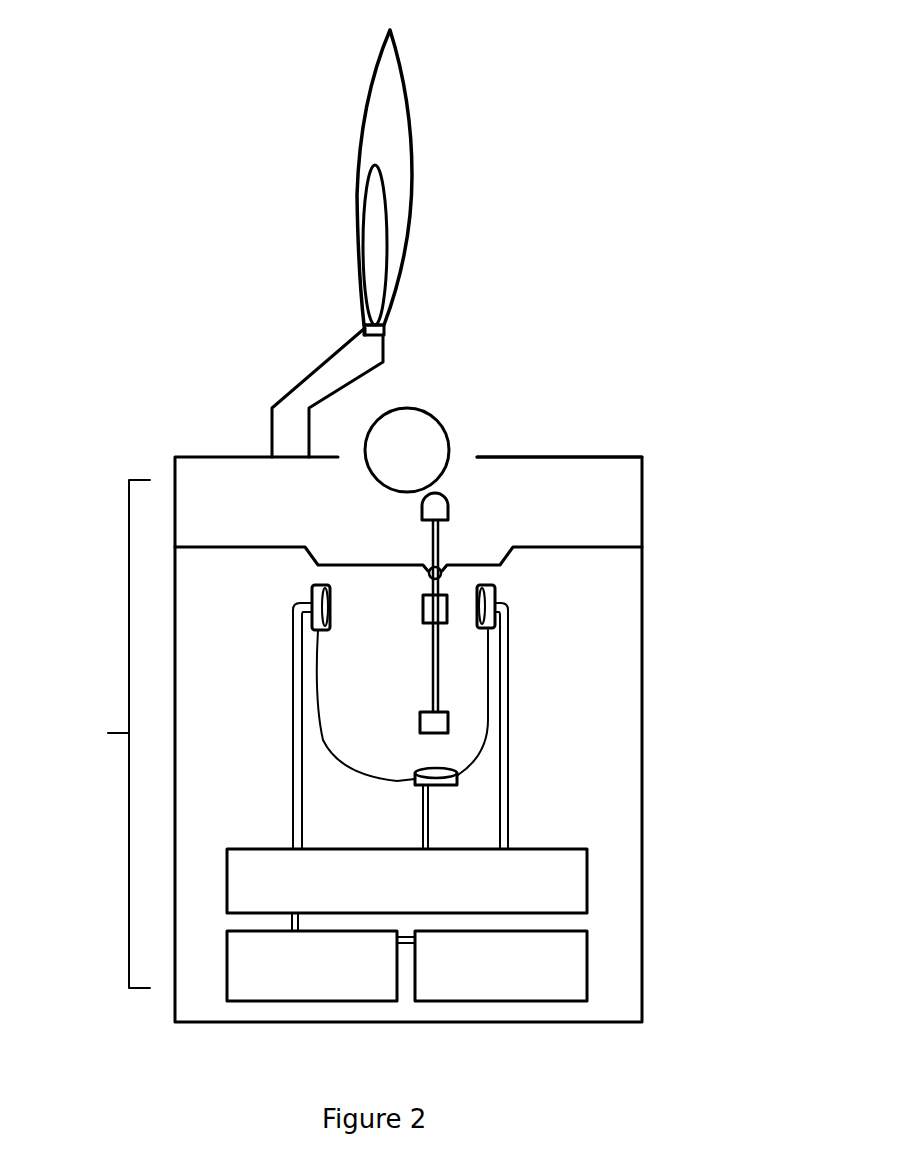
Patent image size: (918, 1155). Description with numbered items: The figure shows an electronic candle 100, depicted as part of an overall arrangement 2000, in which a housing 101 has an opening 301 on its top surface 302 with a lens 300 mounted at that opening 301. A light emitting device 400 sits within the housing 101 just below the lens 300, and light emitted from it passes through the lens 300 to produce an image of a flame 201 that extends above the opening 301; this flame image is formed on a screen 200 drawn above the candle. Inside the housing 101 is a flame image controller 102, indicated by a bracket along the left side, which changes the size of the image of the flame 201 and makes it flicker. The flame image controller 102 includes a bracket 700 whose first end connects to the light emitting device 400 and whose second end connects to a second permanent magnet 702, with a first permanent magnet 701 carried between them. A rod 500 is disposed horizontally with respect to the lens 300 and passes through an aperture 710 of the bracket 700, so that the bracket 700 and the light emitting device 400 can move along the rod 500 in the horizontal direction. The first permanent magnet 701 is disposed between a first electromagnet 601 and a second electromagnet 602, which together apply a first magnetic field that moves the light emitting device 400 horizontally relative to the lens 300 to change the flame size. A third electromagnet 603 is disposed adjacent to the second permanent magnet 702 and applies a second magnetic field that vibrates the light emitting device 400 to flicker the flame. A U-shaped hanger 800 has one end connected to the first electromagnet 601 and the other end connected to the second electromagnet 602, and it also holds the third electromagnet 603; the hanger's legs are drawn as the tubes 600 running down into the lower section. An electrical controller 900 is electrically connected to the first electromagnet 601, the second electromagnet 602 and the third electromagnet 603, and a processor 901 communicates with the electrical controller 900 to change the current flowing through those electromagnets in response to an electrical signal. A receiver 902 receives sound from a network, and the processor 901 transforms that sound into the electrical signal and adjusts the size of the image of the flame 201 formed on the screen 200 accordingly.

The system 2000 is at (168, 52).
The electronic candle 100 is at (183, 405).
The housing 101 is at (642, 618).
The flame image controller 102 is at (94, 734).
The screen 200 is at (410, 210).
The image of a flame 201 is at (387, 247).
The lens 300 is at (408, 408).
The opening 301 is at (460, 450).
The top surface 302 is at (572, 455).
The light emitting device 400 is at (422, 510).
The rod 500 is at (278, 545).
The sensor tube 600 is at (343, 778).
The first electromagnet 601 is at (497, 592).
The second electromagnet 602 is at (312, 592).
The third electromagnet 603 is at (458, 785).
The bracket 700 is at (462, 548).
The first permanent magnet 701 is at (423, 610).
The second permanent magnet 702 is at (420, 726).
The aperture 710 is at (430, 575).
The U-shaped hanger 800 is at (488, 745).
The electrical controller 900 is at (381, 897).
The processor 901 is at (288, 980).
The receiver 902 is at (476, 980).